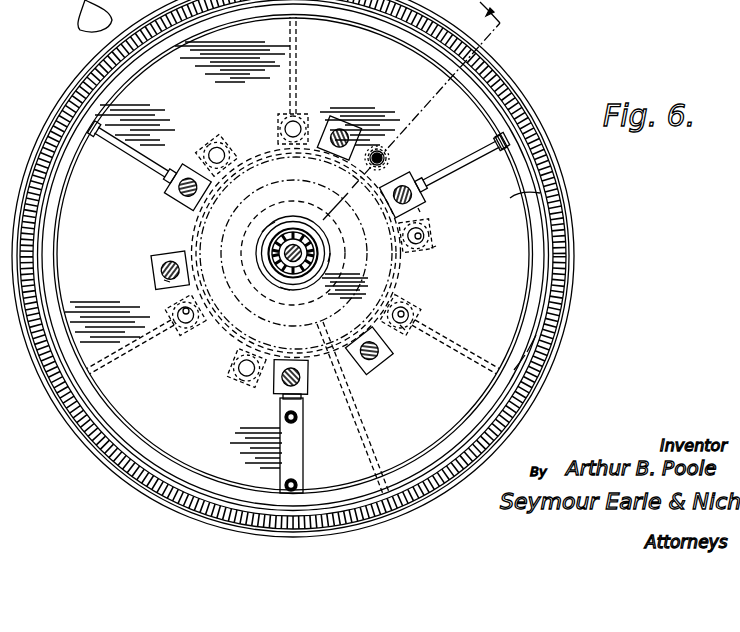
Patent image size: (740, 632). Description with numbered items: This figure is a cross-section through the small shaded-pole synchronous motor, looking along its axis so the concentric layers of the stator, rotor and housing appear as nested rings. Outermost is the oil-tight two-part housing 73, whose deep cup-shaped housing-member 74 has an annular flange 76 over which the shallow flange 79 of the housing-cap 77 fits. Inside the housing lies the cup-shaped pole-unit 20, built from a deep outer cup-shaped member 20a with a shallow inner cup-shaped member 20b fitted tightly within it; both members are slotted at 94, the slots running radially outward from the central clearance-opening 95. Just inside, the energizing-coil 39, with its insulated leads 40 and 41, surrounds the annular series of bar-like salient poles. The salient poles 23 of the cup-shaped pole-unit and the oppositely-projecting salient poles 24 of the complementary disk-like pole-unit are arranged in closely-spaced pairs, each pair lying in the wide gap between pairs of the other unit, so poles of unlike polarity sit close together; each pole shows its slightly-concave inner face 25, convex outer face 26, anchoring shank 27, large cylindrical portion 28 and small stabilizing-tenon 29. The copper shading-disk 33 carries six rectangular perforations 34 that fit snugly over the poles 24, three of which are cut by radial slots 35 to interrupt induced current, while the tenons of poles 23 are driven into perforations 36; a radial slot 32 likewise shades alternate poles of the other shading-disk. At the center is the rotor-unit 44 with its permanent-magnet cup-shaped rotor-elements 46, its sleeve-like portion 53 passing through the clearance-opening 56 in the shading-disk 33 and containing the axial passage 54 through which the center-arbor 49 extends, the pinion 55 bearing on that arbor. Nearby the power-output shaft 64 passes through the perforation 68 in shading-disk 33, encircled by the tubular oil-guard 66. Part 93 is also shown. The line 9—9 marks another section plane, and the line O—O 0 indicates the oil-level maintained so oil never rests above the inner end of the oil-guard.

The oil-level line 0 is at (54, 420).
The section line 9 is at (330, 200).
The cup-shaped pole-unit 20 is at (560, 262).
The outer cup-shaped member 20a is at (574, 284).
The inner cup-shaped member 20b is at (543, 292).
The salient poles 23 is at (270, 123).
The salient poles 24 is at (177, 204).
The inner face 25 is at (392, 252).
The outer face 26 is at (422, 208).
The cylindrical shank 27 is at (160, 264).
The cylindrical portion 28 is at (305, 113).
The stabilizing-tenon 29 is at (430, 246).
The radial slot 32 is at (301, 48).
The shading-disk 33 is at (98, 262).
The perforations 34 is at (407, 178).
The radial slots 35 is at (103, 147).
The perforation 36 is at (426, 236).
The energizing-coil 39 is at (505, 140).
The insulated lead 40 is at (299, 417).
The insulated lead 41 is at (299, 485).
The rotor-unit 44 is at (302, 202).
The cup-shaped rotor-elements 46 is at (190, 210).
The center-arbor 49 is at (301, 234).
The sleeve-like portion 53 is at (272, 256).
The axial passage 54 is at (268, 228).
The pinion 55 is at (296, 283).
The clearance-opening 56 is at (339, 251).
The power-output shaft 64 is at (379, 148).
The oil-guard 66 is at (385, 156).
The perforation 68 is at (368, 163).
The housing 73 is at (562, 328).
The cup-shaped housing-member 74 is at (556, 335).
The annular flange 76 is at (552, 352).
The housing-cap 77 is at (577, 233).
The annular flange 79 is at (565, 215).
The part 93 is at (83, 30).
The slots 94 is at (368, 437).
The central clearance-opening 95 is at (267, 325).